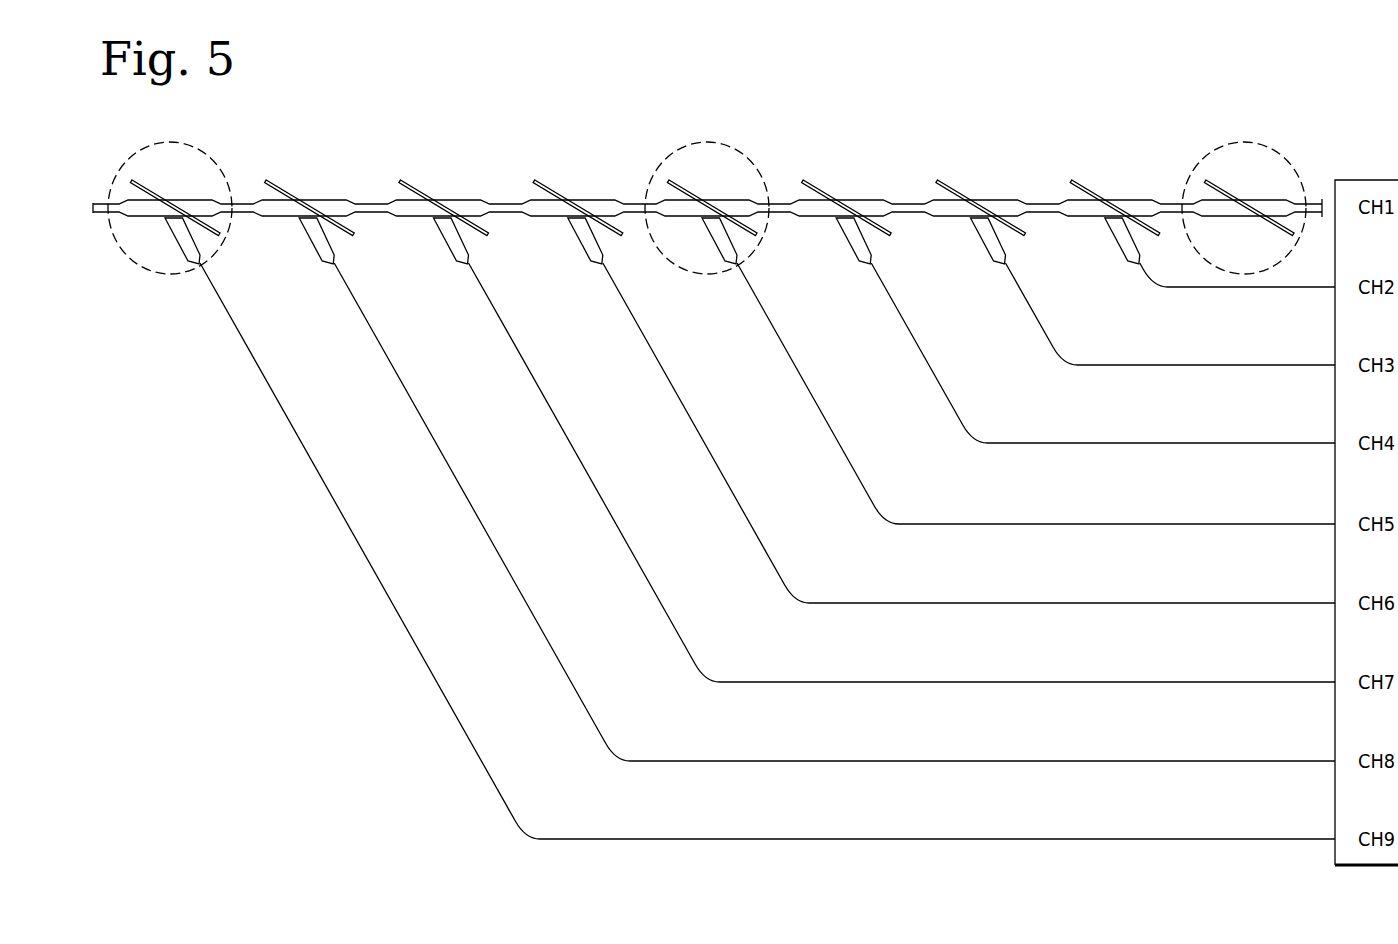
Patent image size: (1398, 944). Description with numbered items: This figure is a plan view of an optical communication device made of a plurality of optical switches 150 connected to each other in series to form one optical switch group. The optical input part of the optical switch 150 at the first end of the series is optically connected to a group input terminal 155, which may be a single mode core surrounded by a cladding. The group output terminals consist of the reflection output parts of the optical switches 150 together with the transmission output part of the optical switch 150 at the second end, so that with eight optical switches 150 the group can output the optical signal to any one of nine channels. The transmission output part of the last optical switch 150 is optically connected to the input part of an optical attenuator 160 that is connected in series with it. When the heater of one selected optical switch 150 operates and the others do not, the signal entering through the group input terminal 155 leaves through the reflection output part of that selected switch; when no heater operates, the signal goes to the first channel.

The optical switch 150 is at (206, 152).
The group input terminal 155 is at (106, 204).
The optical attenuator 160 is at (1244, 142).